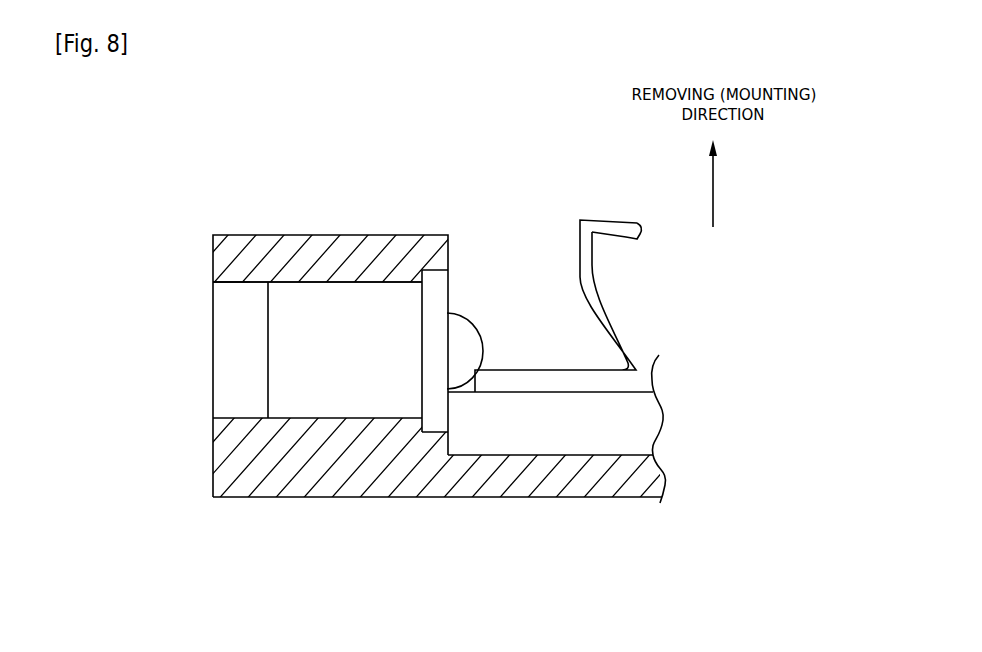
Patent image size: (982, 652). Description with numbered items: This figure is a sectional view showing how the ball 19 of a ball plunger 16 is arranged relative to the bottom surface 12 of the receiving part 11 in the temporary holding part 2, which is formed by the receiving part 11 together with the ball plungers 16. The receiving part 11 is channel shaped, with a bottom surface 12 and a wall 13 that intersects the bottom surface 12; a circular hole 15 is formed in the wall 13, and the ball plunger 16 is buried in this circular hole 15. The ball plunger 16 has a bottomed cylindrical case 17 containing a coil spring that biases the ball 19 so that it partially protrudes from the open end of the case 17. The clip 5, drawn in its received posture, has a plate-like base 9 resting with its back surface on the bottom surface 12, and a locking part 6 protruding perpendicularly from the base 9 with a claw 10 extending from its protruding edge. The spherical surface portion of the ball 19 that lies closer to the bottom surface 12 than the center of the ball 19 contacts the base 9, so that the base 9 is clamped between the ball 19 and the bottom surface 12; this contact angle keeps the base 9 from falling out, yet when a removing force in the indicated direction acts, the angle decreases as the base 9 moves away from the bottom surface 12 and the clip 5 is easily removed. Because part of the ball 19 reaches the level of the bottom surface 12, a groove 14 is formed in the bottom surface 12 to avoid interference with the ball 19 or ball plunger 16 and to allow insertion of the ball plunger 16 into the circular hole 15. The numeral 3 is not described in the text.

The temporary holding part 2 is at (313, 555).
The mating connector 3 is at (168, 458).
The clip 5 is at (558, 198).
The locking part 6 is at (582, 217).
The base 9 is at (543, 370).
The claw 10 is at (639, 222).
The receiving part 11 is at (491, 216).
The bottom surface 12 is at (528, 392).
The wall 13 is at (270, 235).
The groove 14 is at (587, 450).
The circular hole 15 is at (246, 283).
The ball plunger 16 is at (230, 359).
The case 17 is at (317, 302).
The ball 19 is at (453, 313).